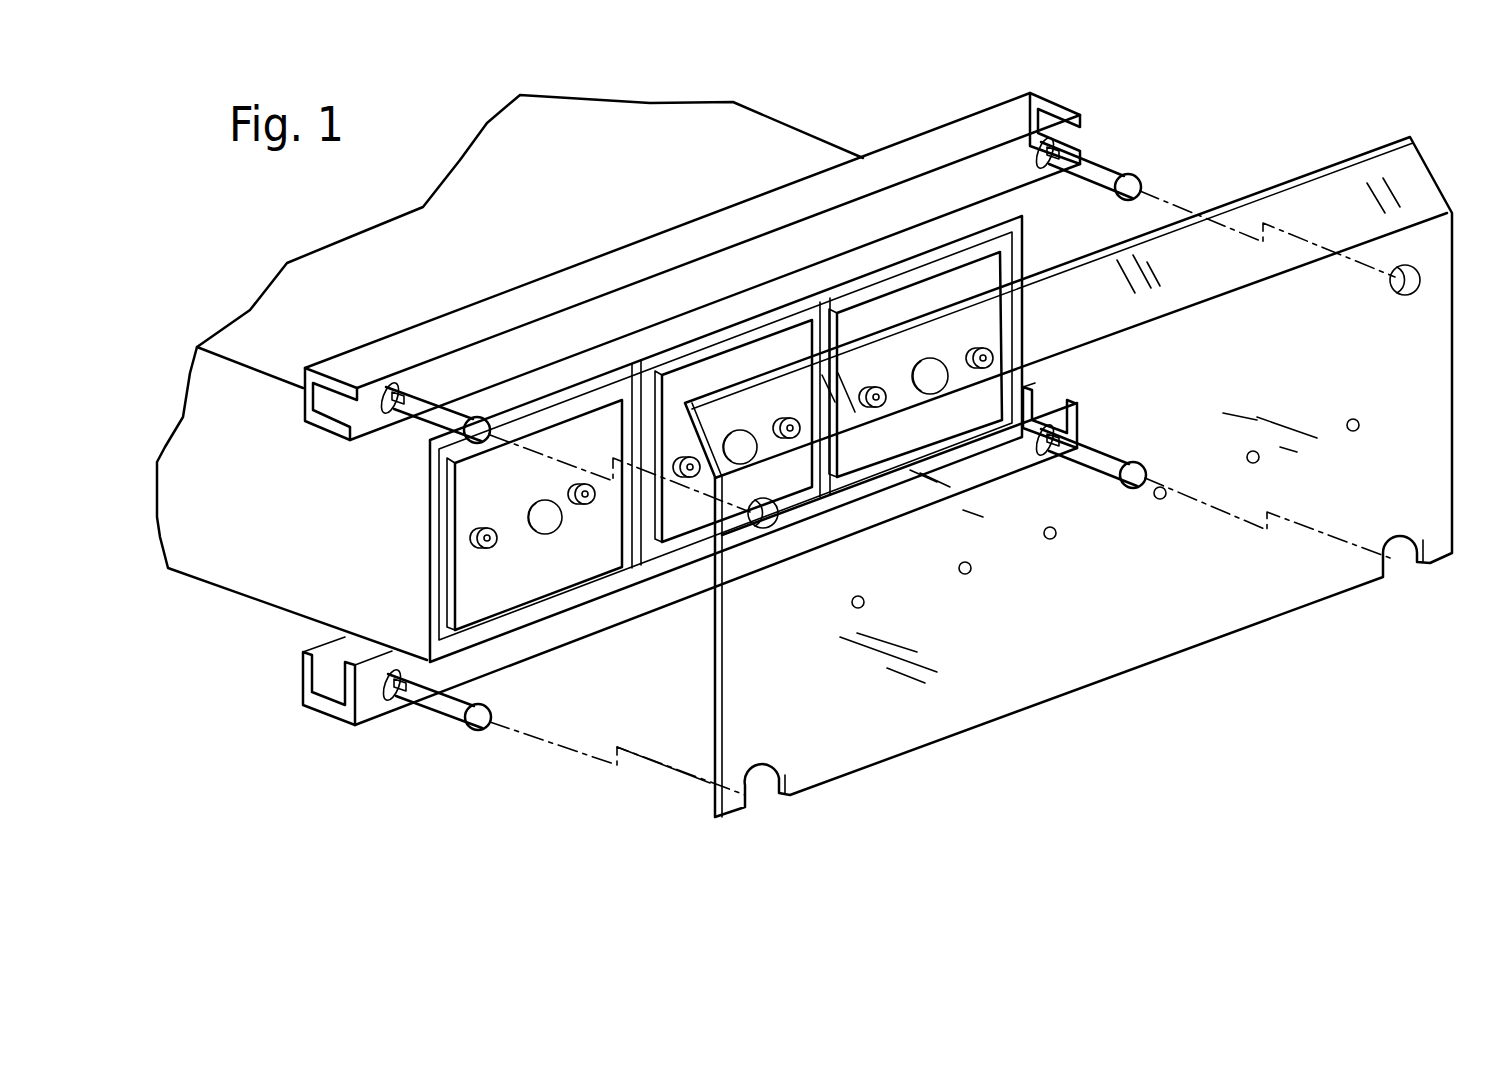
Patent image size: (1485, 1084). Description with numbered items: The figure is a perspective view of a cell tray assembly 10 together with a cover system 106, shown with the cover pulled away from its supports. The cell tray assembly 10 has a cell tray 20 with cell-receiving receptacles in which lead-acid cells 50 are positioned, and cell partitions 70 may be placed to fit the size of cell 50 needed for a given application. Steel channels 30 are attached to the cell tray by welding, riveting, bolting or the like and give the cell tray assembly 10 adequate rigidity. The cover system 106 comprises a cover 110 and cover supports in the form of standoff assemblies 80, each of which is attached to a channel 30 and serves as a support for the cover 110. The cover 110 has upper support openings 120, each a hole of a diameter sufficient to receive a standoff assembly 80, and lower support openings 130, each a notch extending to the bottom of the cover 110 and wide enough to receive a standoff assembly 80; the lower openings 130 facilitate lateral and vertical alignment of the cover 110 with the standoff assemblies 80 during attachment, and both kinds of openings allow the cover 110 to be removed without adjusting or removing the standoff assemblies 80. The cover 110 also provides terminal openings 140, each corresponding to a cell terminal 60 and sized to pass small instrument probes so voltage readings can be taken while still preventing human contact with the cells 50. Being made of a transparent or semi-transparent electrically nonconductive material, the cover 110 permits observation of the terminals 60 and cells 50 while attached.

The cell tray assembly 10 is at (845, 140).
The cell tray 20 is at (598, 147).
The steel channel 30 is at (1032, 108).
The cell 50 is at (990, 272).
The cell terminal 60 is at (587, 493).
The cell partition 70 is at (822, 312).
The standoff assembly 80 is at (1100, 167).
The cover system 106 is at (672, 780).
The cover 110 is at (973, 728).
The upper support opening 120 is at (1410, 292).
The lower support opening 130 is at (1390, 568).
The terminal opening 140 is at (1353, 431).